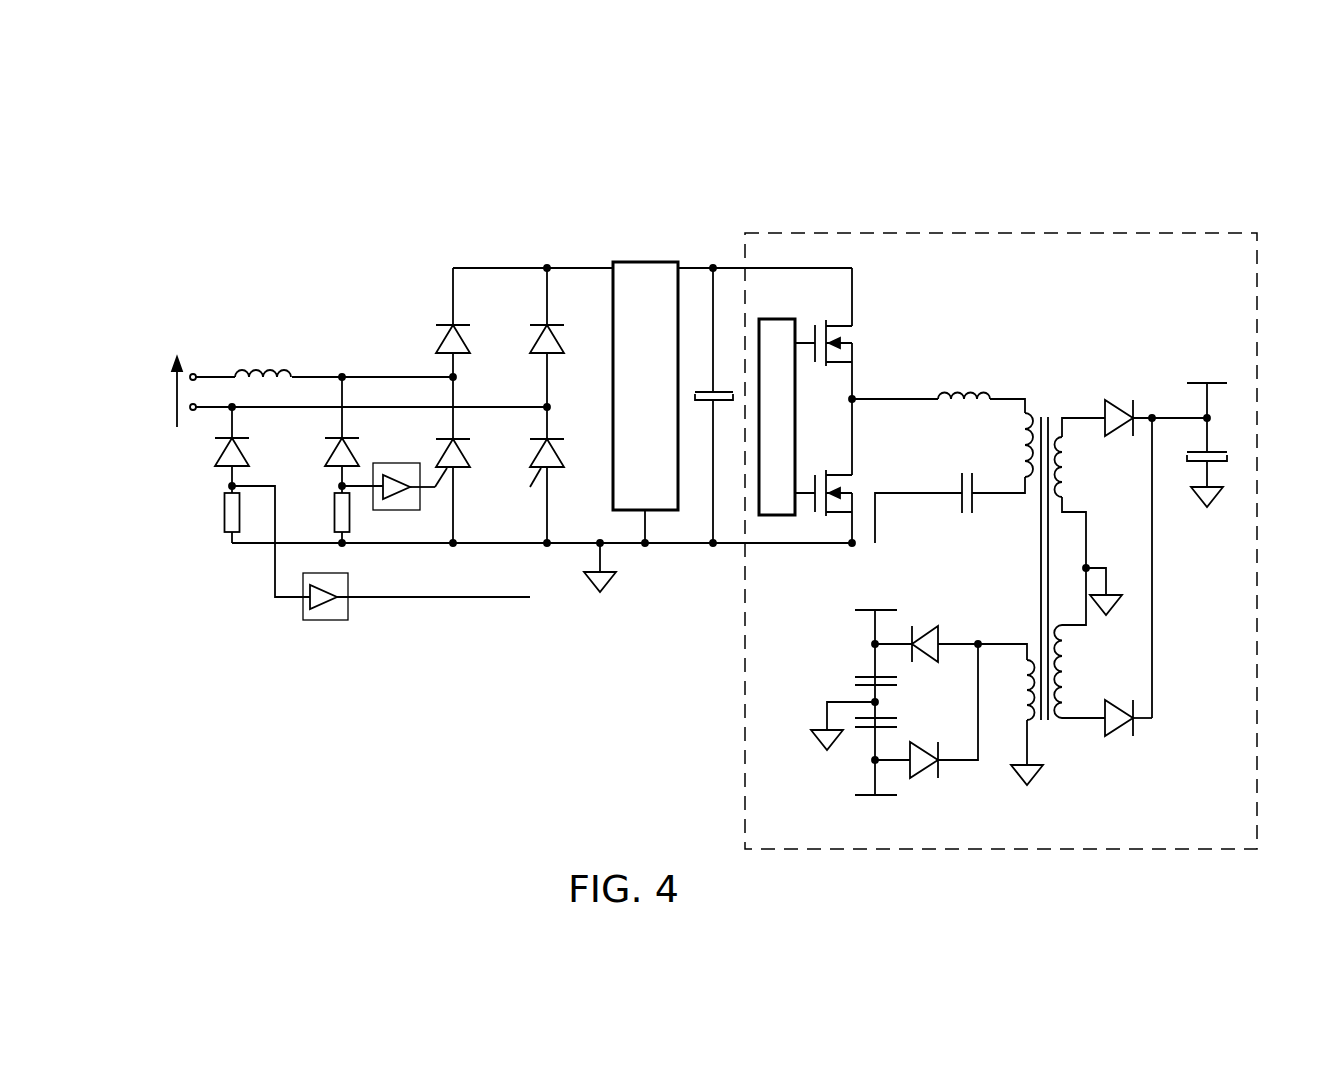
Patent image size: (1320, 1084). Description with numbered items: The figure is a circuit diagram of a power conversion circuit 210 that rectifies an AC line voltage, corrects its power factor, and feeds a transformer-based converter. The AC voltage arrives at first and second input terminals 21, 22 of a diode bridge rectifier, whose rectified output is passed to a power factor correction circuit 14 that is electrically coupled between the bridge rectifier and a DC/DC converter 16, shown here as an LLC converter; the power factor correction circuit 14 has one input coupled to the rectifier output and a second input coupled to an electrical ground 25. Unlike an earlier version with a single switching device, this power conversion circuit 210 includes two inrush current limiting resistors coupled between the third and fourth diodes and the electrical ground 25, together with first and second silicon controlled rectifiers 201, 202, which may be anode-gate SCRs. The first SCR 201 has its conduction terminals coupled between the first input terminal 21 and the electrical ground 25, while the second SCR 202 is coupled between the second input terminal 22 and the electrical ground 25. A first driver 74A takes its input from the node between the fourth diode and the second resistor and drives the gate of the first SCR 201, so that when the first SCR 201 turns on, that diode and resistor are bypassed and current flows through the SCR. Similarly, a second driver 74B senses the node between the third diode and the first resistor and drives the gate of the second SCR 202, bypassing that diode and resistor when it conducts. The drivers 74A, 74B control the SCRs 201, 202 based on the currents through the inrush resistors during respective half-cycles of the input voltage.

The power conversion circuit 210 is at (1107, 133).
The DC/DC converter 16 is at (1133, 232).
The power factor correction circuit 14 is at (647, 262).
The first input terminal 21 is at (342, 374).
The second input terminal 22 is at (230, 410).
The first silicon controlled rectifier 201 is at (458, 470).
The second silicon controlled rectifier 202 is at (551, 470).
The first driver 74A is at (400, 511).
The second driver 74B is at (325, 621).
The electrical ground 25 is at (610, 581).